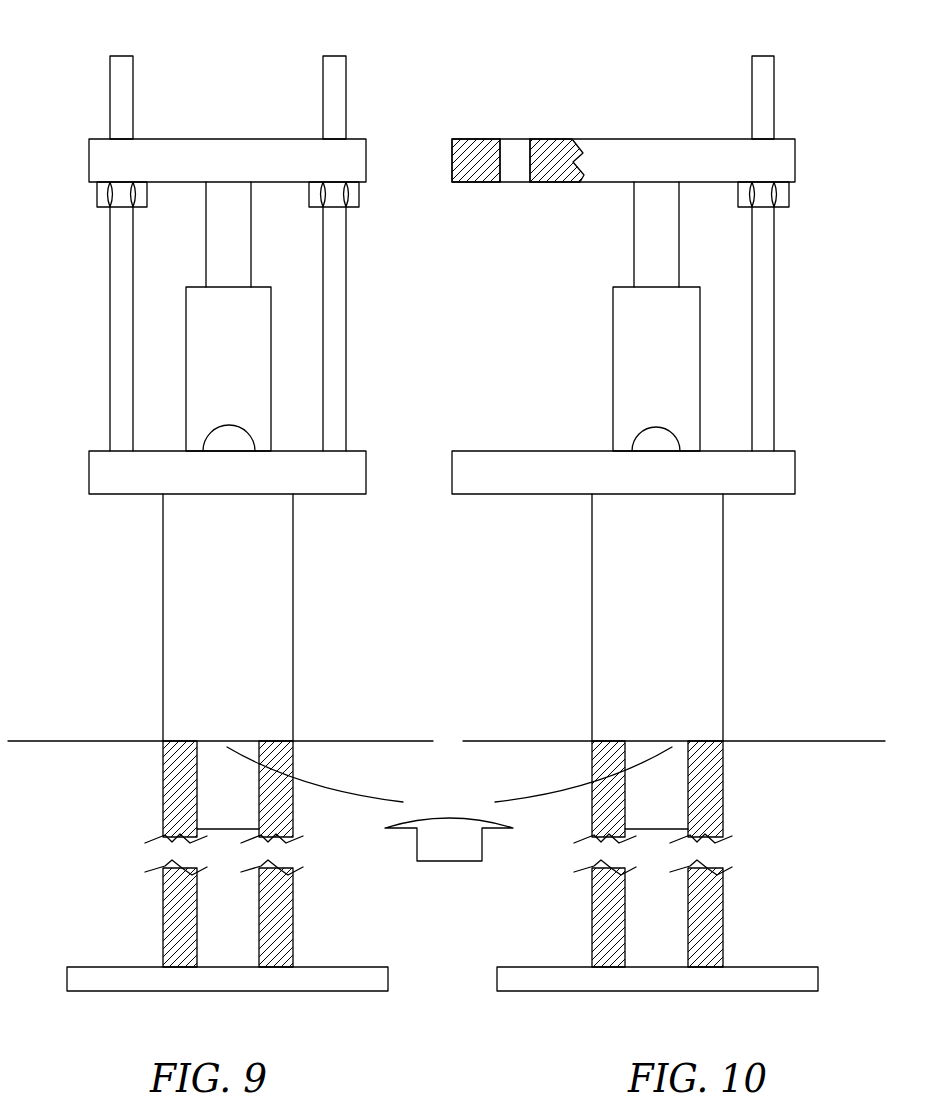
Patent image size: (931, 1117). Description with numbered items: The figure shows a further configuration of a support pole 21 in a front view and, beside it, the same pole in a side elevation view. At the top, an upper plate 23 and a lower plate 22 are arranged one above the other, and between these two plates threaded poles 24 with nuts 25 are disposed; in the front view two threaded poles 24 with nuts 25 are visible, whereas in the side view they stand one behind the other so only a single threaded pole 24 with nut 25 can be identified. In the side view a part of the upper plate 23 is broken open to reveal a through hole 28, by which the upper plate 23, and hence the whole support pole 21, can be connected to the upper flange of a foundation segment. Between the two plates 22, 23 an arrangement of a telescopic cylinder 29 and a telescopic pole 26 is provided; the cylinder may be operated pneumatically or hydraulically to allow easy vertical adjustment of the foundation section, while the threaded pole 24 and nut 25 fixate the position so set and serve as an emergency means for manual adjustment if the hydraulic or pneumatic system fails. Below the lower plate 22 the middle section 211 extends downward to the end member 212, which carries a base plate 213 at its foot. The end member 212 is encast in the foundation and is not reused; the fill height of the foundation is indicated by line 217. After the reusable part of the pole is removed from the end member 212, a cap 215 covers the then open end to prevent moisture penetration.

In FIG. 9, the support pole 21 is at (262, 907).
In FIG. 10, the support pole 21 is at (690, 907).
In FIG. 9, the middle section 211 is at (183, 613).
In FIG. 10, the middle section 211 is at (623, 613).
In FIG. 9, the end member 212 is at (155, 792).
In FIG. 10, the end member 212 is at (728, 793).
In FIG. 9, the base plate 213 is at (226, 980).
In FIG. 10, the base plate 213 is at (653, 980).
In FIG. 9, the cap 215 is at (450, 843).
In FIG. 9, the line 217 is at (363, 733).
In FIG. 10, the line 217 is at (513, 733).
In FIG. 9, the lower plate 22 is at (455, 474).
In FIG. 10, the lower plate 22 is at (623, 472).
In FIG. 9, the upper plate 23 is at (219, 158).
In FIG. 10, the upper plate 23 is at (654, 158).
In FIG. 9, the threaded pole 24 is at (122, 77).
In FIG. 10, the threaded pole 24 is at (764, 77).
In FIG. 9, the nut 25 is at (102, 193).
In FIG. 10, the nut 25 is at (782, 193).
In FIG. 9, the telescopic pole 26 is at (237, 242).
In FIG. 10, the telescopic pole 26 is at (664, 242).
In FIG. 10, the through hole 28 is at (511, 158).
In FIG. 9, the telescopic cylinder 29 is at (250, 354).
In FIG. 10, the telescopic cylinder 29 is at (678, 354).